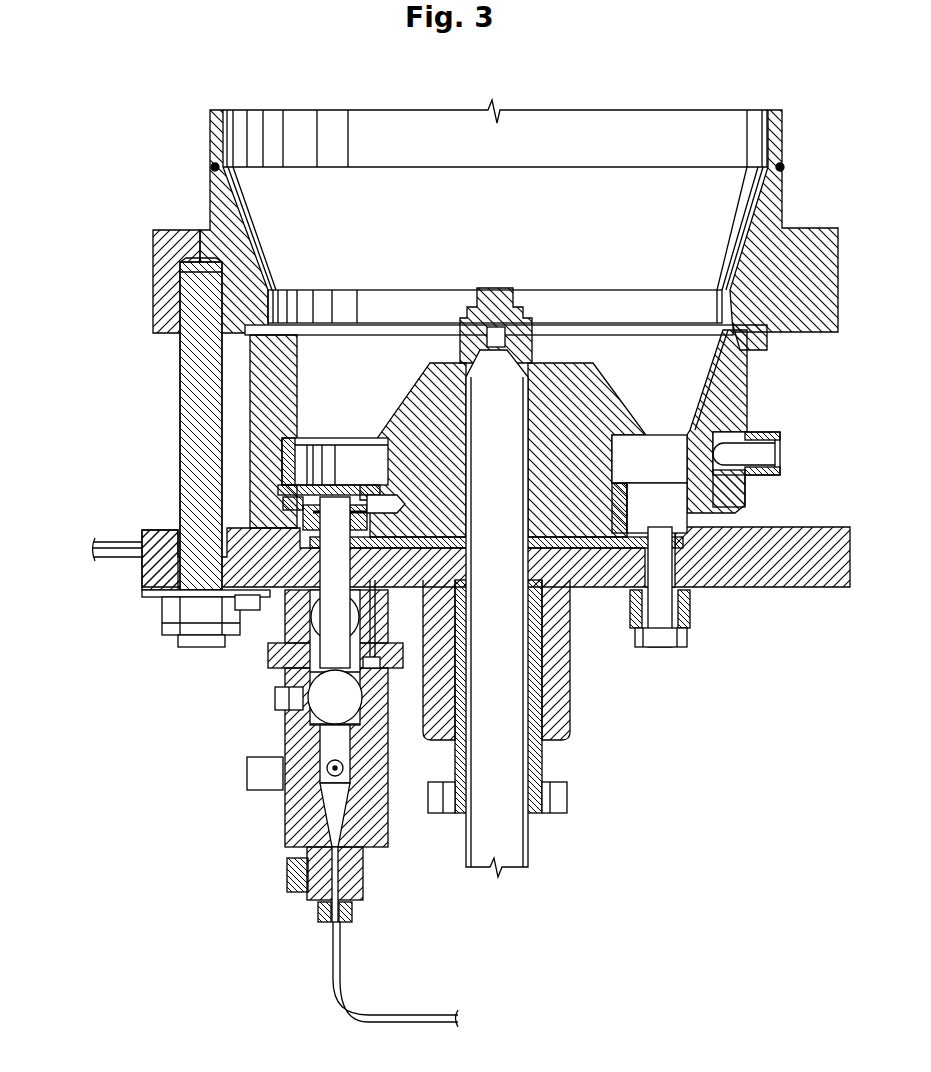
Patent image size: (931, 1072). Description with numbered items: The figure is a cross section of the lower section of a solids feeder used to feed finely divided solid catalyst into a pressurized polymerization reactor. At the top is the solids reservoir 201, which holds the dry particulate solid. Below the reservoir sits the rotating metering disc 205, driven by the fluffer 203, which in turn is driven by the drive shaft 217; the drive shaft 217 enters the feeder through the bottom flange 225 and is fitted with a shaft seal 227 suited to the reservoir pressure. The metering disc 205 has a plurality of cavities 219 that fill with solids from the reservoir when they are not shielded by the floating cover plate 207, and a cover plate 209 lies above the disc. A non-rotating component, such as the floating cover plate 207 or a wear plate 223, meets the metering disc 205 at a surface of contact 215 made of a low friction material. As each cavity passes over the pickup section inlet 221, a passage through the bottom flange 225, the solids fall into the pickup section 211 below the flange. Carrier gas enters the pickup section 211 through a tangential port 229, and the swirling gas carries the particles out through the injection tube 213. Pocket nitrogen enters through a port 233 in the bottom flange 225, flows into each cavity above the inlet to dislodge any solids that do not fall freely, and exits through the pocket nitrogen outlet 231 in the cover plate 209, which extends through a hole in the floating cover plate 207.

The solids reservoir 201 is at (783, 146).
The fluffer 203 is at (440, 380).
The metering disc 205 is at (272, 660).
The floating cover plate 207 is at (345, 445).
The cover plate 209 is at (355, 490).
The pickup section 211 is at (285, 738).
The injection tube 213 is at (332, 972).
The surface of contact 215 is at (330, 508).
The drive shaft 217 is at (510, 843).
The cavities 219 is at (283, 540).
The pickup section inlet 221 is at (180, 577).
The wear plate 223 is at (585, 560).
The bottom flange 225 is at (763, 588).
The shaft seal 227 is at (540, 660).
The tangential port 229 is at (283, 777).
The pocket nitrogen outlet 231 is at (300, 520).
The port 233 is at (127, 542).